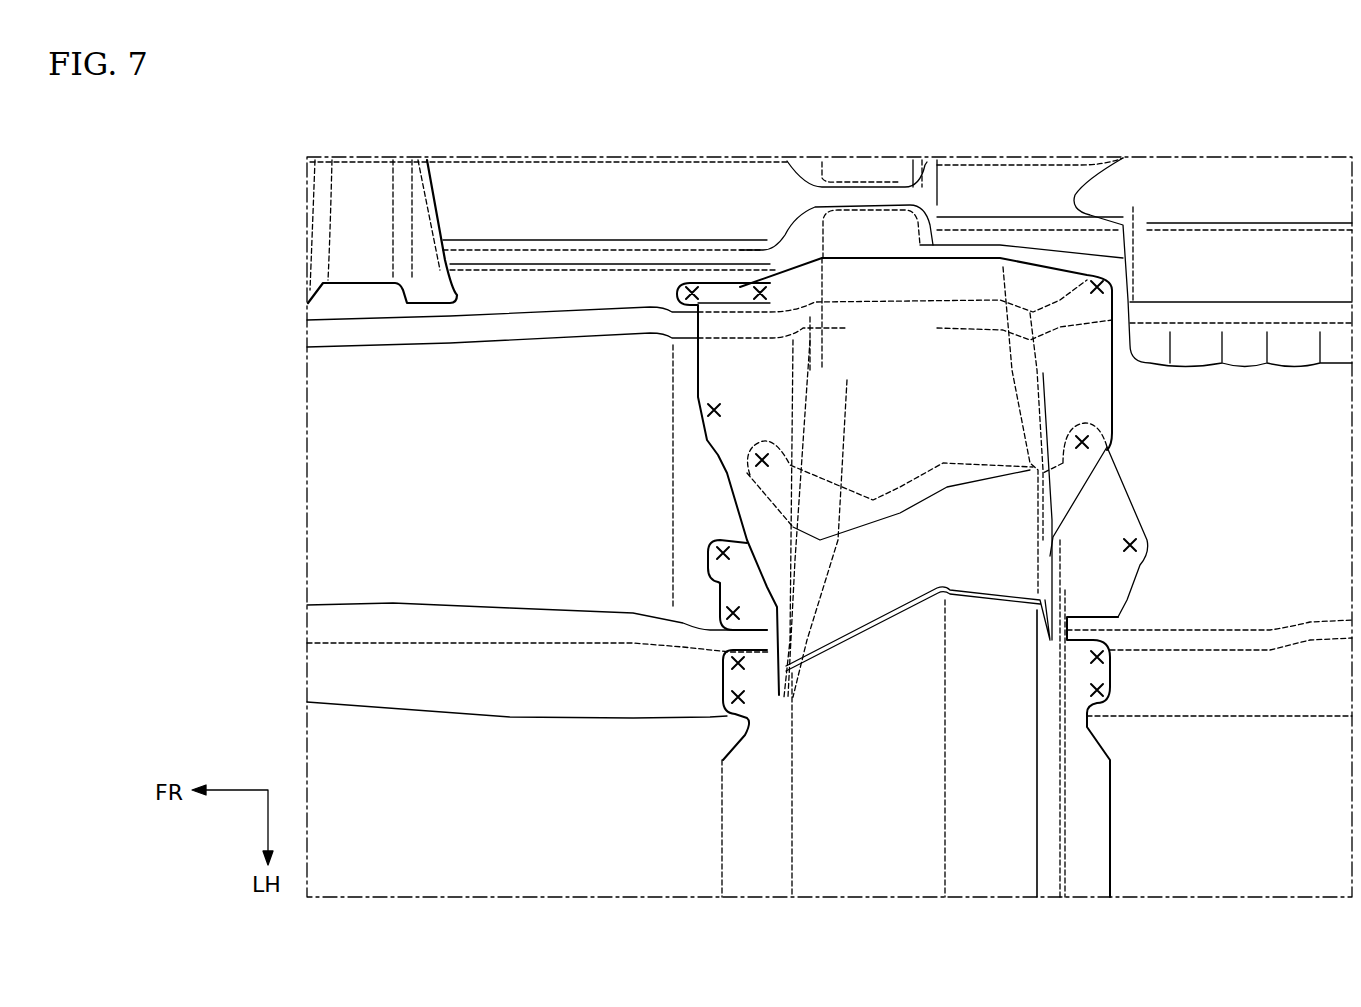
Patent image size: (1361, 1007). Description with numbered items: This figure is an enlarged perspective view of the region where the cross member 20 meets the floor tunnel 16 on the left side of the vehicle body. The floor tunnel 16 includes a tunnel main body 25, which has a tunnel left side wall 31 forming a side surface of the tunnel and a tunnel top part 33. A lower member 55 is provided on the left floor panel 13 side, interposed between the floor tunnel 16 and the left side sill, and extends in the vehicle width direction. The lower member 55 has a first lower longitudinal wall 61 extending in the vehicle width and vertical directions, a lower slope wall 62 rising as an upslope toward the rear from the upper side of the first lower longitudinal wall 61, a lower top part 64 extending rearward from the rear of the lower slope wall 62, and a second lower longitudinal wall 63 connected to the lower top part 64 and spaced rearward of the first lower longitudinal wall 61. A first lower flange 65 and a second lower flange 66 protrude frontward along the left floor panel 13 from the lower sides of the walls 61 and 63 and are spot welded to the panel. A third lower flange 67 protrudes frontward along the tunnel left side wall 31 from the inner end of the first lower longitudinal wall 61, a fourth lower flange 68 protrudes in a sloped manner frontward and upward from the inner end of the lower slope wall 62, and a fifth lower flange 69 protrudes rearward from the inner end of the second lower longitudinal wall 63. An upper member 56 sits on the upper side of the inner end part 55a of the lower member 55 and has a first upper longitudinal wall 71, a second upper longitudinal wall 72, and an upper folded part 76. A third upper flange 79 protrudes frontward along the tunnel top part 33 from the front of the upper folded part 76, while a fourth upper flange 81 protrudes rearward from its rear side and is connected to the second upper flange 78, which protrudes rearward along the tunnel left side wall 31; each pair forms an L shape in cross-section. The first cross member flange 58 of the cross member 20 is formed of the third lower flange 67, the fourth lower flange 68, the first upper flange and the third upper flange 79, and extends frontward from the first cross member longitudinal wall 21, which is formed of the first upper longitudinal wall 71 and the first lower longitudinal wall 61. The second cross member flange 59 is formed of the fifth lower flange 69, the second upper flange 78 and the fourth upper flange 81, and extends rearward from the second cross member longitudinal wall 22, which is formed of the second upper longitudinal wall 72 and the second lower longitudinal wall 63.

The left floor panel 13 is at (610, 883).
The floor tunnel 16 is at (687, 147).
The cross member 20 is at (522, 882).
The first cross member longitudinal wall 21 is at (672, 775).
The second cross member longitudinal wall 22 is at (1220, 750).
The tunnel main body 25 is at (745, 180).
The tunnel left side wall 31 is at (440, 385).
The tunnel top part 33 is at (592, 183).
The lower member 55 is at (768, 827).
The inner end part 55a is at (972, 597).
The upper member 56 is at (699, 397).
The first cross member flange 58 is at (705, 358).
The second cross member flange 59 is at (1088, 340).
The first lower longitudinal wall 61 is at (780, 743).
The lower slope wall 62 is at (917, 775).
The second lower longitudinal wall 63 is at (1050, 744).
The lower top part 64 is at (1013, 815).
The first lower flange 65 is at (732, 868).
The second lower flange 66 is at (1097, 853).
The third lower flange 67 is at (725, 578).
The fourth lower flange 68 is at (760, 490).
The fifth lower flange 69 is at (1120, 502).
The first upper longitudinal wall 71 is at (727, 440).
The second upper longitudinal wall 72 is at (1042, 570).
The upper folded part 76 is at (910, 268).
The second upper flange 78 is at (1102, 388).
The third upper flange 79 is at (728, 296).
The fourth upper flange 81 is at (1088, 277).